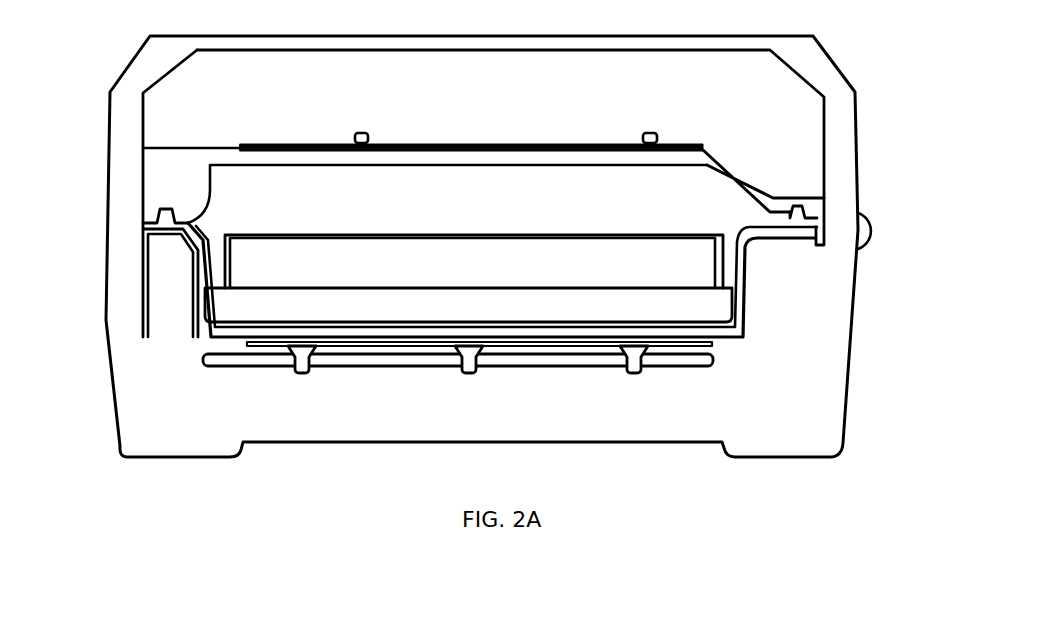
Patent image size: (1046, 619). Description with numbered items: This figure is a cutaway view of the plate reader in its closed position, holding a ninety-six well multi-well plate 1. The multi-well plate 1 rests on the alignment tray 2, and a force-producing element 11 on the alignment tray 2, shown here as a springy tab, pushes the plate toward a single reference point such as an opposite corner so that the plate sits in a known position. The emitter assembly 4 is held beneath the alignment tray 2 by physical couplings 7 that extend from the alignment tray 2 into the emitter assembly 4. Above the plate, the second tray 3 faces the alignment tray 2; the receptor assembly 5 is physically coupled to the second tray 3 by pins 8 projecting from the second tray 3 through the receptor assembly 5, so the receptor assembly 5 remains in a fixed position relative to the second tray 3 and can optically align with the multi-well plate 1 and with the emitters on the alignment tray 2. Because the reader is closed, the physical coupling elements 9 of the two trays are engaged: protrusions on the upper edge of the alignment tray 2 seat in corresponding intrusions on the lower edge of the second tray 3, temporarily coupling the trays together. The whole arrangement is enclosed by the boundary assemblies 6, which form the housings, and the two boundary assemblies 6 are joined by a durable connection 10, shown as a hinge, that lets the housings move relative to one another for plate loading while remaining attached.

The multi-well plate 1 is at (736, 307).
The alignment tray 2 is at (752, 337).
The second tray 3 is at (764, 180).
The emitter assembly 4 is at (726, 370).
The receptor assembly 5 is at (720, 152).
The boundary assembly 6 is at (866, 98).
The physical coupling 7 is at (627, 383).
The physical coupling 8 is at (636, 130).
The physical coupling element 9 is at (140, 222).
The durable connection 10 is at (891, 240).
The force-producing element 11 is at (197, 288).